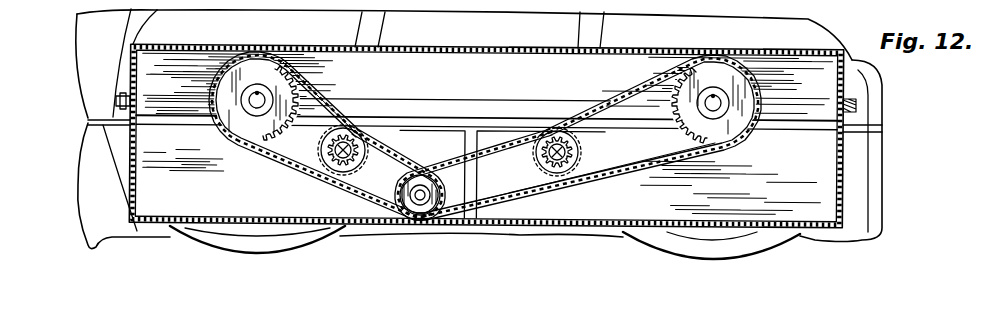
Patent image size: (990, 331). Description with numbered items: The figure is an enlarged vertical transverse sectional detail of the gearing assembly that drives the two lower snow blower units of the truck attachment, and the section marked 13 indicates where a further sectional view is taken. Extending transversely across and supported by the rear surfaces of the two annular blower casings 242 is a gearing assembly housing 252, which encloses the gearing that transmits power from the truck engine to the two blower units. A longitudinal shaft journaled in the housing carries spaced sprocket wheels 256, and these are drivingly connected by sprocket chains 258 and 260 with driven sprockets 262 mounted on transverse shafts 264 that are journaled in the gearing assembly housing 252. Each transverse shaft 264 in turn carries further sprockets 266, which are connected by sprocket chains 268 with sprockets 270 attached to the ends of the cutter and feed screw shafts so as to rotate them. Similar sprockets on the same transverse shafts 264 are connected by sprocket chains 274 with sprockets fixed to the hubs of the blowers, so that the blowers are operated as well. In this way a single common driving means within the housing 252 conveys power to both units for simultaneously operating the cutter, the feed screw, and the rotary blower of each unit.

The section line 13- 13 is at (123, 51).
The annular lower casing 242 is at (383, 31).
The gearing assembly housing 252 is at (476, 48).
The sprocket wheels 256 is at (417, 208).
The sprocket chain 258 is at (398, 148).
The sprocket chain 260 is at (500, 136).
The driven sprockets 262 is at (343, 184).
The transverse shafts 264 is at (343, 132).
The sprockets 266 is at (309, 172).
The sprocket chains 268 is at (675, 160).
The sprockets 270 is at (258, 122).
The sprocket chains 274 is at (347, 141).